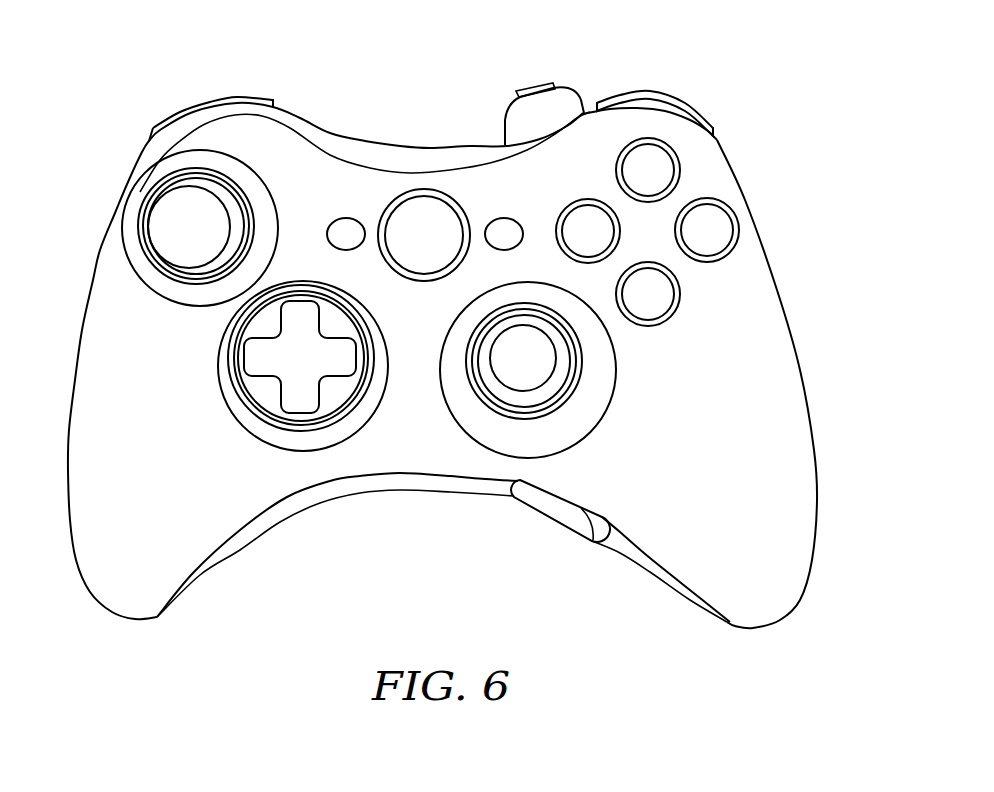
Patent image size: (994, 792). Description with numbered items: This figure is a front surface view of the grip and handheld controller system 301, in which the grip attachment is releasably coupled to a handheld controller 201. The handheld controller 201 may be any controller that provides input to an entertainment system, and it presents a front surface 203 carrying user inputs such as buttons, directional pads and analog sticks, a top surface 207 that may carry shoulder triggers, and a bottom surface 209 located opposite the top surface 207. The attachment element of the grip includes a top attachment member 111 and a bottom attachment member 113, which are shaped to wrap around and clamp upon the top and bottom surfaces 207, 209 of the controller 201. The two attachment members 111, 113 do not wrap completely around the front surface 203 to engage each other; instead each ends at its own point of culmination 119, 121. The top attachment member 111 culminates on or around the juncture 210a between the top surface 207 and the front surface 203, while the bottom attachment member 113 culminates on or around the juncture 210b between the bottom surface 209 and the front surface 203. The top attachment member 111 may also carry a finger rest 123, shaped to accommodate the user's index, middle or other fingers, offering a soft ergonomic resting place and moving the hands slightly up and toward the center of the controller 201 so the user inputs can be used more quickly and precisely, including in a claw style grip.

The top attachment member 111 is at (512, 102).
The bottom attachment member 113 is at (527, 506).
The point of culmination 119 is at (506, 152).
The point of culmination 121 is at (581, 508).
The finger rest 123 is at (553, 85).
The handheld controller 201 is at (812, 258).
The front surface 203 is at (391, 418).
The top surface 207 is at (350, 137).
The bottom surface 209 is at (407, 491).
The juncture 210a is at (400, 153).
The juncture 210b is at (455, 479).
The grip and handheld controller system 301 is at (728, 96).